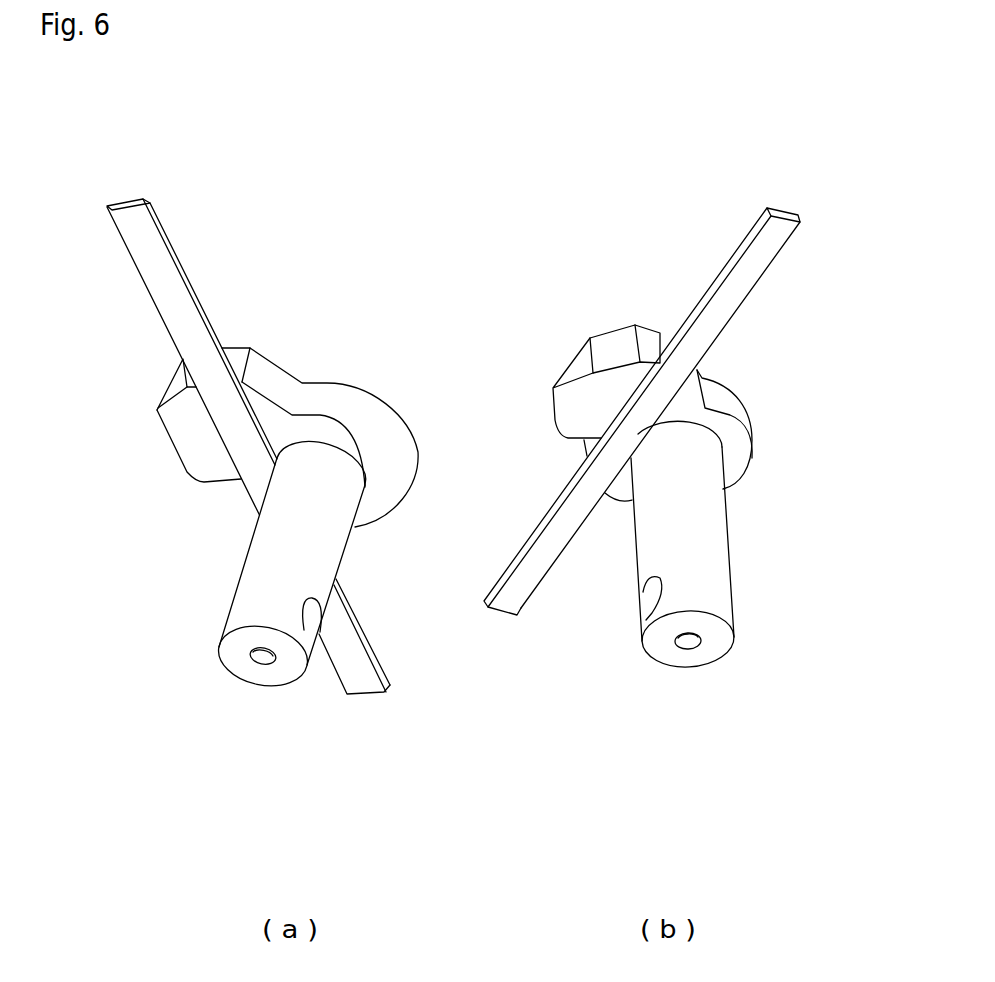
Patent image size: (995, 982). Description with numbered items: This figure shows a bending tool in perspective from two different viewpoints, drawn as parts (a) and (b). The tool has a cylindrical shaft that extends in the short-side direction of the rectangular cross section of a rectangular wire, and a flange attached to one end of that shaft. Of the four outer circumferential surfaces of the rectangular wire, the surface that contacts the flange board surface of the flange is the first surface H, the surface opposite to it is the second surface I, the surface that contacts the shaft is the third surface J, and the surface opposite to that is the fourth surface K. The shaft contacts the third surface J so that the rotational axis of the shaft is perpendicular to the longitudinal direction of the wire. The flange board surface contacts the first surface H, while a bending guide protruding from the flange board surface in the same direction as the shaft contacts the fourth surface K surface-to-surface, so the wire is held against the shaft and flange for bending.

The first surface H is at (140, 198).
The second surface I is at (165, 233).
The third surface J is at (183, 273).
The fourth surface K is at (141, 272).